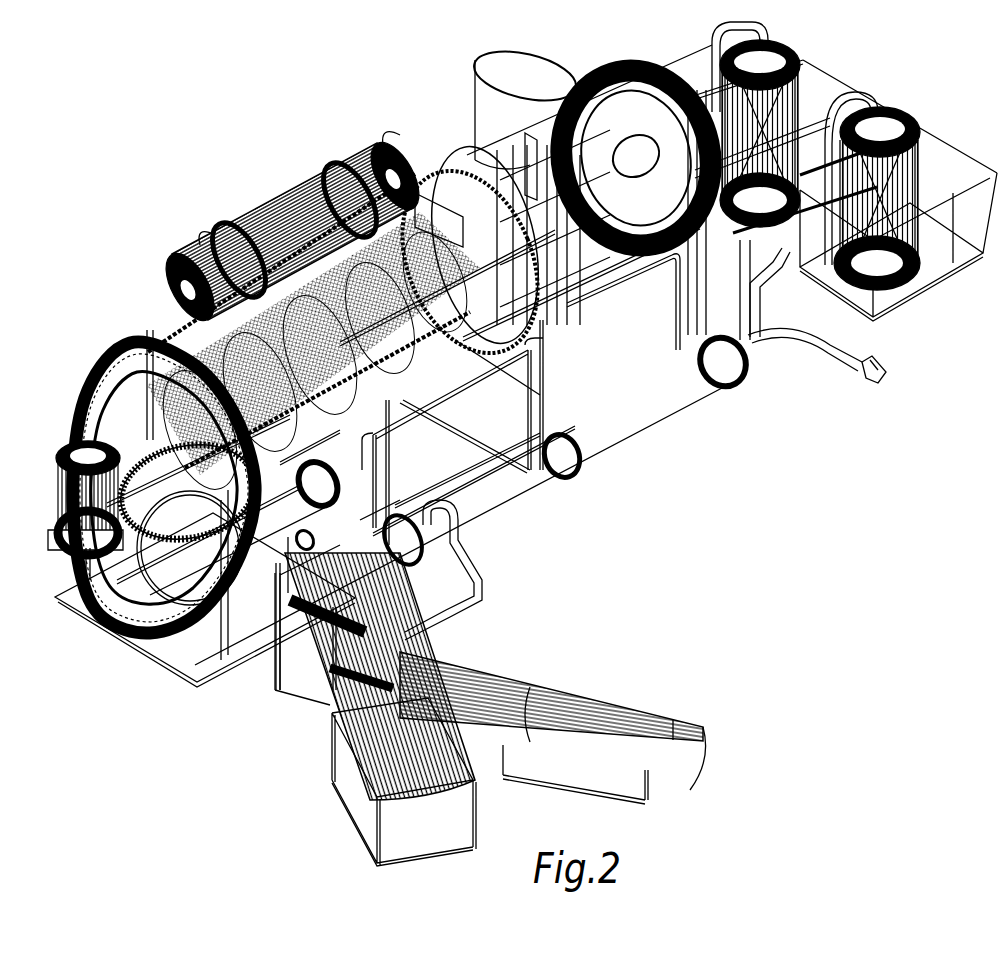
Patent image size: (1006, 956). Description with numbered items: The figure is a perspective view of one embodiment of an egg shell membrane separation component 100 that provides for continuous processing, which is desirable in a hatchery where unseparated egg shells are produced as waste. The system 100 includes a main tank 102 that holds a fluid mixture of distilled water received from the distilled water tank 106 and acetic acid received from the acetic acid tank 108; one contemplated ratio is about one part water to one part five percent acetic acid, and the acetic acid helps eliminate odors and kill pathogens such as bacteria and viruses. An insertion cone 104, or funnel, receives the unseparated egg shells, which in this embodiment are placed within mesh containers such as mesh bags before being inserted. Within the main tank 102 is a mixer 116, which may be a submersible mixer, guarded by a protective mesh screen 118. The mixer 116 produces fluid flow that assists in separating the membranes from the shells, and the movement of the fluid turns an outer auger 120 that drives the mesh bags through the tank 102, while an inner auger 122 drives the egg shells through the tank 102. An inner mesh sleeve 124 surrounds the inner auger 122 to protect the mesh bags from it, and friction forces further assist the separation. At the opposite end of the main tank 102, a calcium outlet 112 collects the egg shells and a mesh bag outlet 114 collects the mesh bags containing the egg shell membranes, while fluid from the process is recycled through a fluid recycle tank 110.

The egg shell membrane separation component 100 is at (193, 122).
The main tank 102 is at (455, 138).
The insertion cone 104 is at (528, 72).
The distilled water tank 106 is at (791, 46).
The acetic acid tank 108 is at (905, 116).
The fluid recycle tank 110 is at (634, 426).
The calcium outlet 112 is at (435, 615).
The mesh bag outlet 114 is at (340, 463).
The mixer 116 is at (645, 62).
The protective mesh screen 118 is at (598, 283).
The outer auger 120 is at (428, 357).
The inner auger 122 is at (85, 510).
The inner mesh sleeve 124 is at (167, 328).